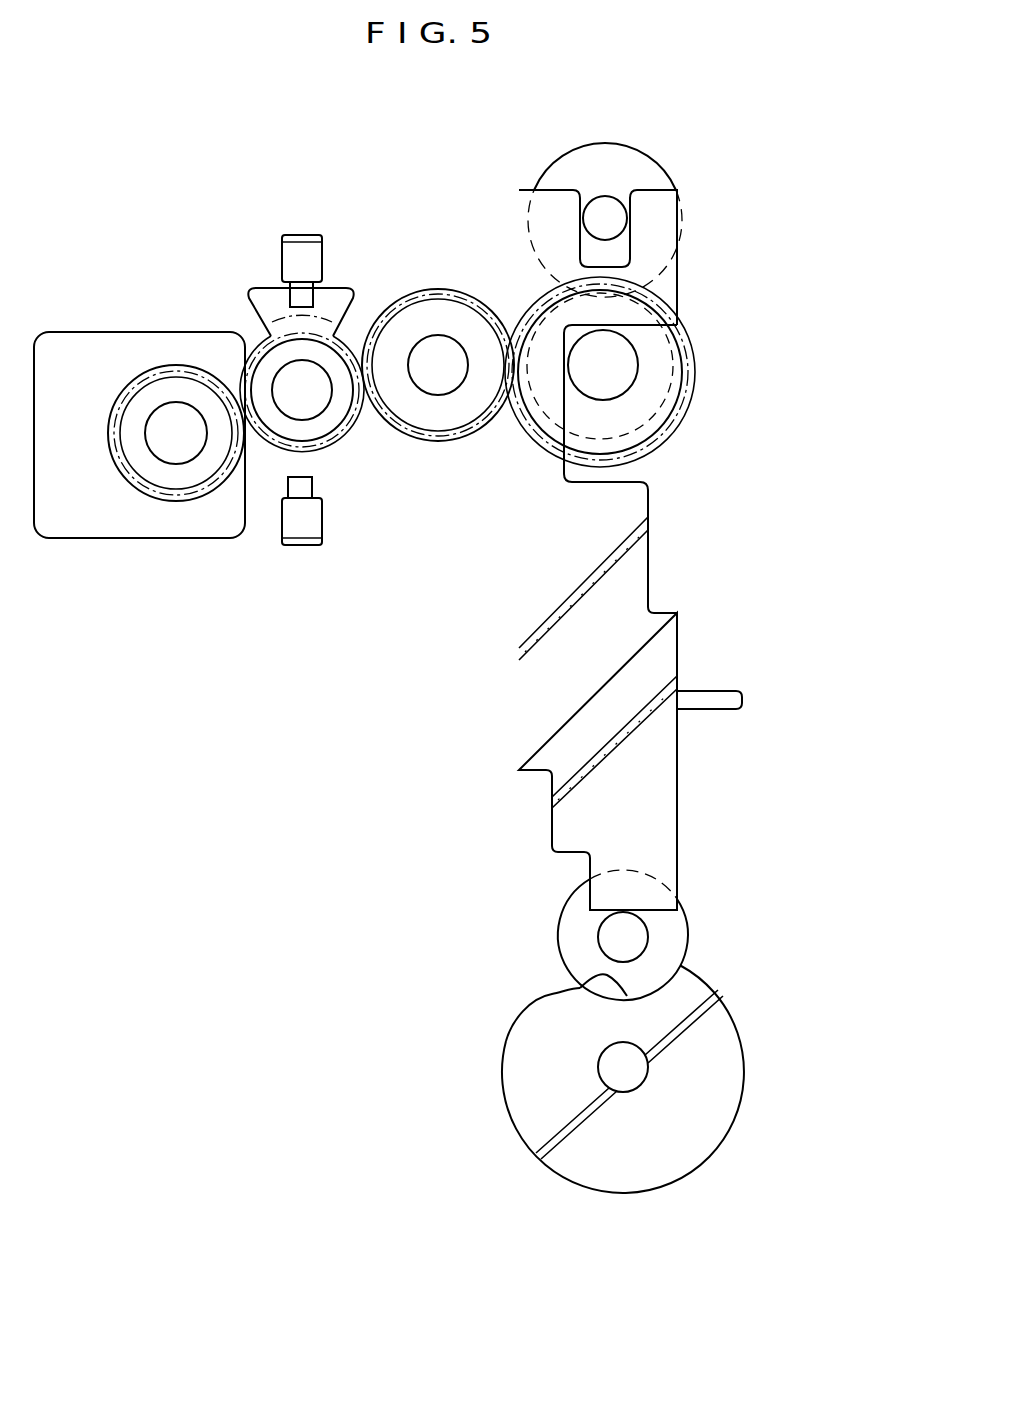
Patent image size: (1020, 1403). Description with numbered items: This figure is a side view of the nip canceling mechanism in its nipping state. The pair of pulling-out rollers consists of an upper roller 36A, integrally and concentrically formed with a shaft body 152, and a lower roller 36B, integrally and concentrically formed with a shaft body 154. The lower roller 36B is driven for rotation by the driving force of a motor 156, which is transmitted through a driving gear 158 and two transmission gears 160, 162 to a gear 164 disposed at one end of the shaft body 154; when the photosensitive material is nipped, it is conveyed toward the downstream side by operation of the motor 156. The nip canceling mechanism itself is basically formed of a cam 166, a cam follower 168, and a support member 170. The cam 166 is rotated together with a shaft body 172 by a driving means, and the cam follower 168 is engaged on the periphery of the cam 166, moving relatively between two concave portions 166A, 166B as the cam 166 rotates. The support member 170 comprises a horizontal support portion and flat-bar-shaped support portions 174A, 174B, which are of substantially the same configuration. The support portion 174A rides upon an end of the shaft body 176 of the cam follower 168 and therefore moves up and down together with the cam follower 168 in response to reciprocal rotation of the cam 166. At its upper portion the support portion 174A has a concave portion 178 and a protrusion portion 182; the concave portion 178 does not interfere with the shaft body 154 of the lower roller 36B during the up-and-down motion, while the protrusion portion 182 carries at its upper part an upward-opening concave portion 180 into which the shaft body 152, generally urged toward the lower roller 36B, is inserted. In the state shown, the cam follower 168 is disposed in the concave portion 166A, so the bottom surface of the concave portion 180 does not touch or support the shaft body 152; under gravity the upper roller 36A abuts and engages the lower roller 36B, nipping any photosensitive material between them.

The upper roller 36A is at (640, 165).
The lower roller 36B is at (653, 395).
The shaft body 152 is at (620, 227).
The shaft body 154 is at (627, 360).
The motor 156 is at (148, 338).
The driving gear 158 is at (190, 488).
The transmission gear 160 is at (345, 437).
The transmission gear 162 is at (447, 432).
The gear 164 is at (670, 432).
The cam 166 is at (737, 1105).
The concave portion 166A is at (570, 978).
The concave portion 166B is at (504, 1072).
The cam follower 168 is at (665, 940).
The support member 170 is at (653, 578).
The shaft body 172 is at (633, 1077).
The support portion 174A is at (657, 642).
The support portion 174B is at (614, 742).
The shaft body 176 is at (608, 928).
The concave portion 178 is at (577, 465).
The concave portion 180 is at (598, 267).
The protrusion portion 182 is at (667, 282).